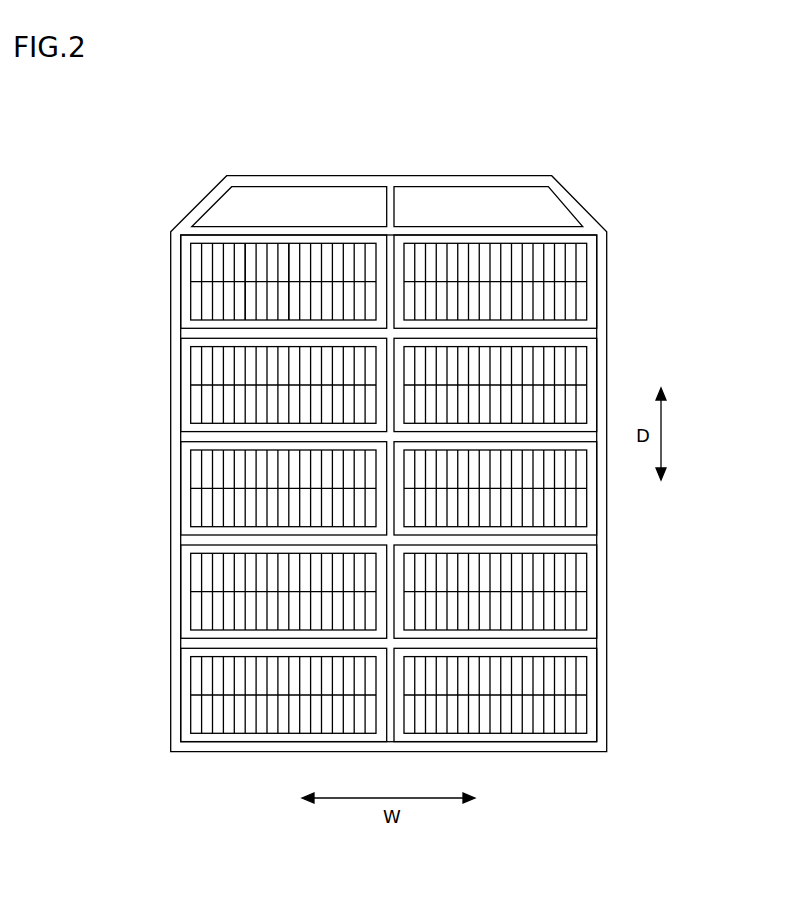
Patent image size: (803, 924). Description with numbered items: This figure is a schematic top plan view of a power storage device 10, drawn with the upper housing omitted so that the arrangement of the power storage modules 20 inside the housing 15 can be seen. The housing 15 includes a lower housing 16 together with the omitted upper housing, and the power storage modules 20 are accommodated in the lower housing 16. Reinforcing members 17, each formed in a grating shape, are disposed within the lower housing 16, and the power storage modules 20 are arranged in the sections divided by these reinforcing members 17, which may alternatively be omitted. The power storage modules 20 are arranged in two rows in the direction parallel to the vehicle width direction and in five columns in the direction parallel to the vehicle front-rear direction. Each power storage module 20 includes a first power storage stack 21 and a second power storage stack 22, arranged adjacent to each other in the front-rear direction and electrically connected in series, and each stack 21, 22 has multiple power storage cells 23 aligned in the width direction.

The power storage device 10 is at (393, 408).
The housing 15 is at (607, 587).
The lower housing 16 is at (607, 587).
The reinforcing members 17 is at (590, 325).
The power storage modules 20 is at (114, 252).
The first power storage stack 21 is at (193, 260).
The second power storage stack 22 is at (193, 300).
The power storage cells 23 is at (250, 268).